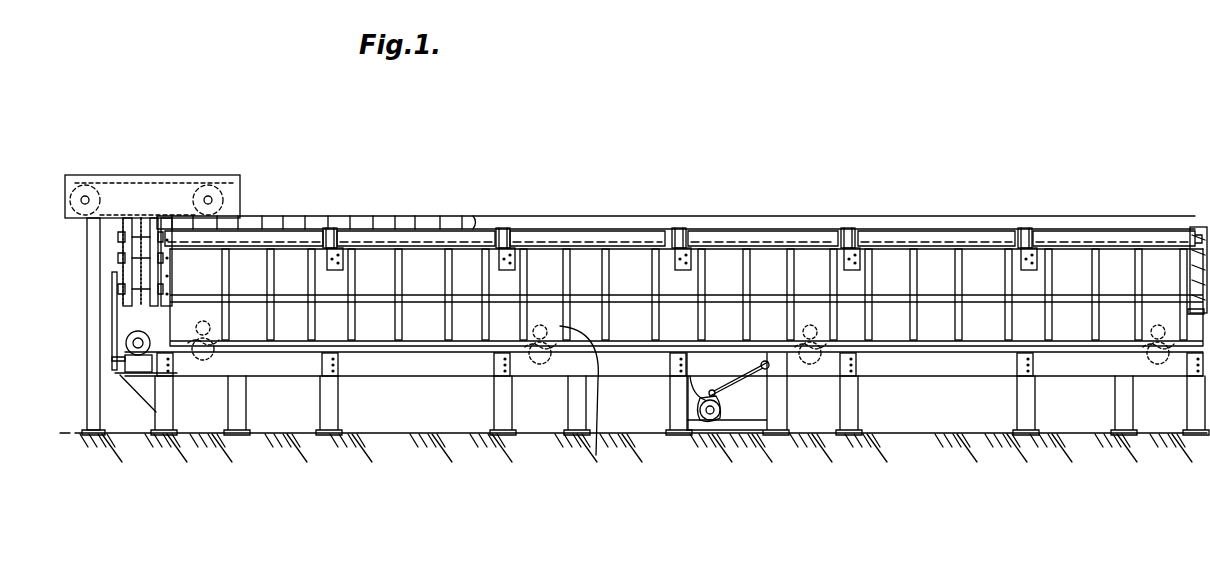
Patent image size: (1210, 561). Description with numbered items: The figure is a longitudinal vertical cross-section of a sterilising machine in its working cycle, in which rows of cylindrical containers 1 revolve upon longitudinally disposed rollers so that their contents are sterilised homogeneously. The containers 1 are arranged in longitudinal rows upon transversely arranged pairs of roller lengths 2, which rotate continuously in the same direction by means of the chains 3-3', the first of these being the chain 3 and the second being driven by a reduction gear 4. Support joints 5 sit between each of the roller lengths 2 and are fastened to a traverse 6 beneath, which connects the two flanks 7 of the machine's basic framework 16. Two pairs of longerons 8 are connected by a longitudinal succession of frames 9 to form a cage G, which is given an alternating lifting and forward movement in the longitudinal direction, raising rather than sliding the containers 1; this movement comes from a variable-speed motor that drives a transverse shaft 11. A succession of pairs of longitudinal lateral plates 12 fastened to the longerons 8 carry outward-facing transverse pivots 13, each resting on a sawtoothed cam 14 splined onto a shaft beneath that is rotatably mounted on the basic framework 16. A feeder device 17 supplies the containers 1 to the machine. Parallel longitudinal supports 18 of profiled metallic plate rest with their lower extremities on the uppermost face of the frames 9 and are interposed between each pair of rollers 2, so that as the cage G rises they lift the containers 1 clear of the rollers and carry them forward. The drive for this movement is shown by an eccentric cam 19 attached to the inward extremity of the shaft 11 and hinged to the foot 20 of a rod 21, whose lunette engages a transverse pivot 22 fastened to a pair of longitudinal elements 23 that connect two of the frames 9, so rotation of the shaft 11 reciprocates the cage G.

The cylindrical containers 1 is at (401, 216).
The roller lengths 2 is at (449, 231).
The chain 3 is at (132, 262).
The chains 3-3' is at (127, 284).
The reduction gear 4 is at (138, 355).
The support joints 5 is at (333, 229).
The traverse 6 is at (336, 268).
The flanks 7 is at (768, 216).
The longerons 8 is at (1070, 300).
The frames 9 is at (571, 272).
The transverse shaft 11 is at (712, 414).
The lateral plates 12 is at (853, 214).
The transverse pivots 13 is at (205, 325).
The sawtoothed cam 14 is at (207, 362).
The basic framework 16 is at (364, 418).
The feeder device 17 is at (195, 168).
The longitudinal supports 18 is at (902, 249).
The eccentric cam 19 is at (729, 404).
The foot 20 is at (700, 404).
The rod 21 is at (777, 380).
The transverse pivot 22 is at (772, 372).
The longitudinal elements 23 is at (758, 363).
The cage G is at (936, 268).